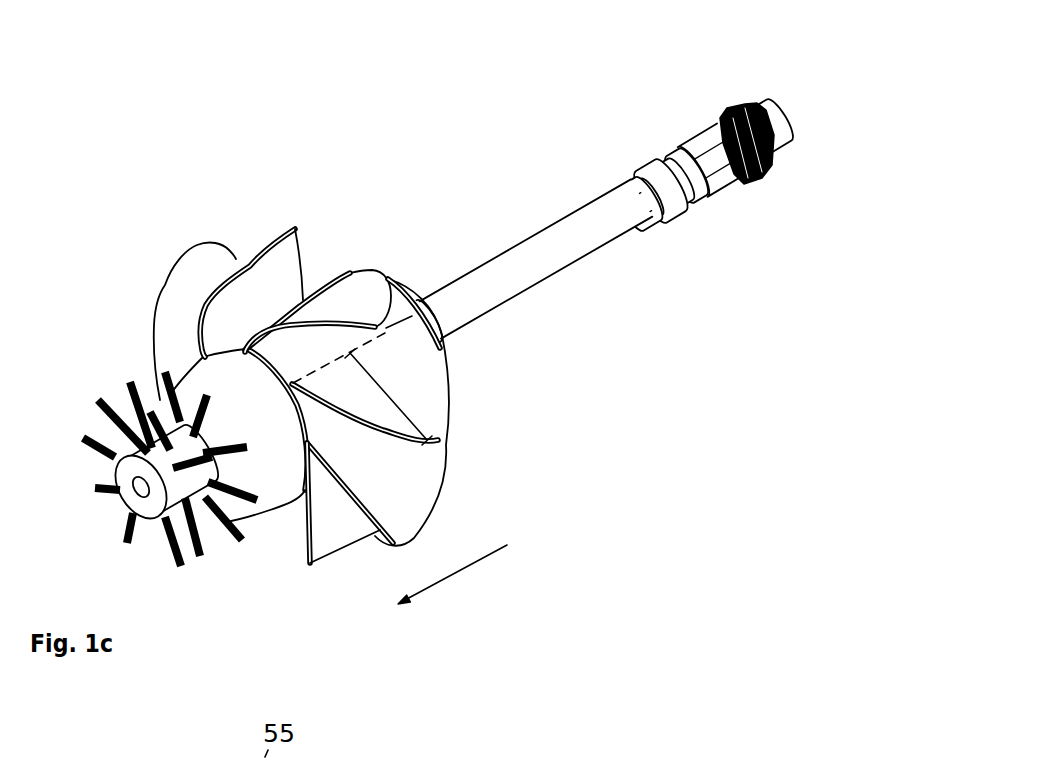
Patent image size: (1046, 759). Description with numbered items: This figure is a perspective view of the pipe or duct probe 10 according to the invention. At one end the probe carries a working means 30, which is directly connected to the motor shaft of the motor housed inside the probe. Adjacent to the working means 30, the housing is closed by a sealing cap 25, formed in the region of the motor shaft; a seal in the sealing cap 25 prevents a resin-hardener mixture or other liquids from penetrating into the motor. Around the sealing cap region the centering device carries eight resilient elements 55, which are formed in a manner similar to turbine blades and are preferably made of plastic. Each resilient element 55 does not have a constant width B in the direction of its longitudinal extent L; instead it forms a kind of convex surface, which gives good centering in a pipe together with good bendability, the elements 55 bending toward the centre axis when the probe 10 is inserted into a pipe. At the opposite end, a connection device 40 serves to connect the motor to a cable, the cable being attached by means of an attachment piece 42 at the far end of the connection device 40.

The pipe or duct probe 10 is at (432, 310).
The sealing cap 25 is at (250, 395).
The working means 30 is at (114, 382).
The connection device 40 is at (554, 227).
The attachment piece 42 is at (768, 104).
The resilient elements 55 is at (367, 315).
The width B is at (397, 405).
The longitudinal extent L is at (433, 583).